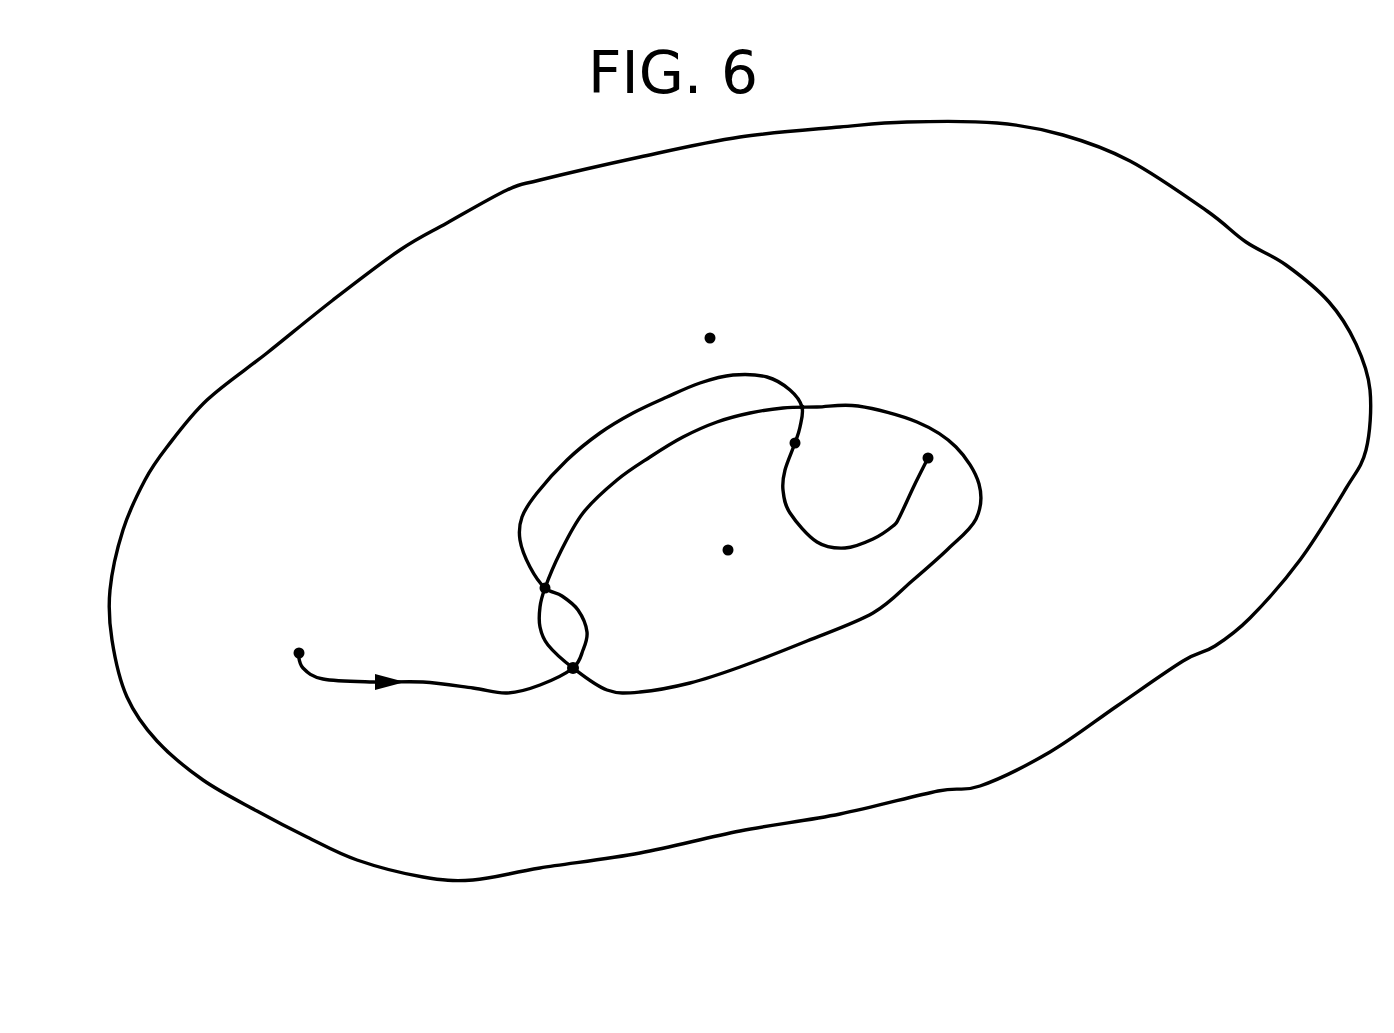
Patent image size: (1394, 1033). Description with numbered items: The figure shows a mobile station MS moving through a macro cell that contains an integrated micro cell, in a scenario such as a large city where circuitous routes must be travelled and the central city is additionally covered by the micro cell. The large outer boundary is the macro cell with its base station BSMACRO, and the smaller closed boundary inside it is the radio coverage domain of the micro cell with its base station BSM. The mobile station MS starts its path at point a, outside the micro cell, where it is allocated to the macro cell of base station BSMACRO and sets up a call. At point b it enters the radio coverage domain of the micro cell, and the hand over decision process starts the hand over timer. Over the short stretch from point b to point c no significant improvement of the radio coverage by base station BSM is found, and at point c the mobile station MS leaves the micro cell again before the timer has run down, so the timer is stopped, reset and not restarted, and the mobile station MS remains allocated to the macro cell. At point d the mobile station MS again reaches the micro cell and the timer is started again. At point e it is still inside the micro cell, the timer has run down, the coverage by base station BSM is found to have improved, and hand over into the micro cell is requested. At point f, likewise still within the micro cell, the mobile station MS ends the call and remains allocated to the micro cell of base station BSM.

The starting point a is at (299, 635).
The point b is at (577, 686).
The point c is at (534, 588).
The point d is at (814, 391).
The point e is at (807, 446).
The point f is at (940, 458).
The mobile station MS is at (613, 534).
The base station of the macro cell BSMACRO is at (740, 500).
The base station of the micro cell BSM is at (760, 549).